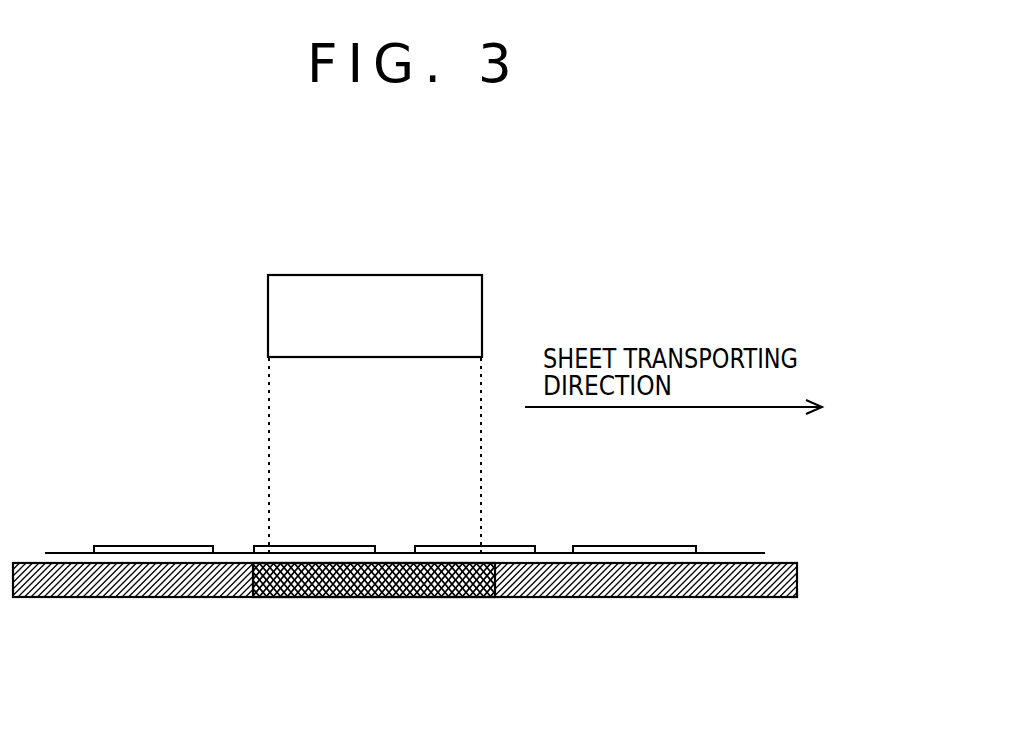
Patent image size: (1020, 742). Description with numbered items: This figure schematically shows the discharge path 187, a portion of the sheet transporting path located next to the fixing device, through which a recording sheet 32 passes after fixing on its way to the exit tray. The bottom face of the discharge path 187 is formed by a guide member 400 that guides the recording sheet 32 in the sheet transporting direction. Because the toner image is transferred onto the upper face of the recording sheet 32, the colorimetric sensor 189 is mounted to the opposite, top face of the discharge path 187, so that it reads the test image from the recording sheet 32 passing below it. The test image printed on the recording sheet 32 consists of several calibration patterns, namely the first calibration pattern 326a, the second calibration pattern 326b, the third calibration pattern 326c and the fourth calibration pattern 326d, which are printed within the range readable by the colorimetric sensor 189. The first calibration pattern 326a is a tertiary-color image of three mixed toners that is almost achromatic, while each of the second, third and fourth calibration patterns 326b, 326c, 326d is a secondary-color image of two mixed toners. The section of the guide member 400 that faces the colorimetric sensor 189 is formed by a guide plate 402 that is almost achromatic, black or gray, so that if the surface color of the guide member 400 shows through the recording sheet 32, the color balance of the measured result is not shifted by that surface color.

The discharge path 187 is at (174, 289).
The colorimetric sensor 189 is at (375, 414).
The recording sheet 32 is at (733, 553).
The first calibration pattern 326a is at (640, 545).
The second calibration pattern 326b is at (515, 545).
The third calibration pattern 326c is at (318, 545).
The fourth calibration pattern 326d is at (157, 545).
The guide member 400 is at (98, 598).
The guide plate 402 is at (367, 598).